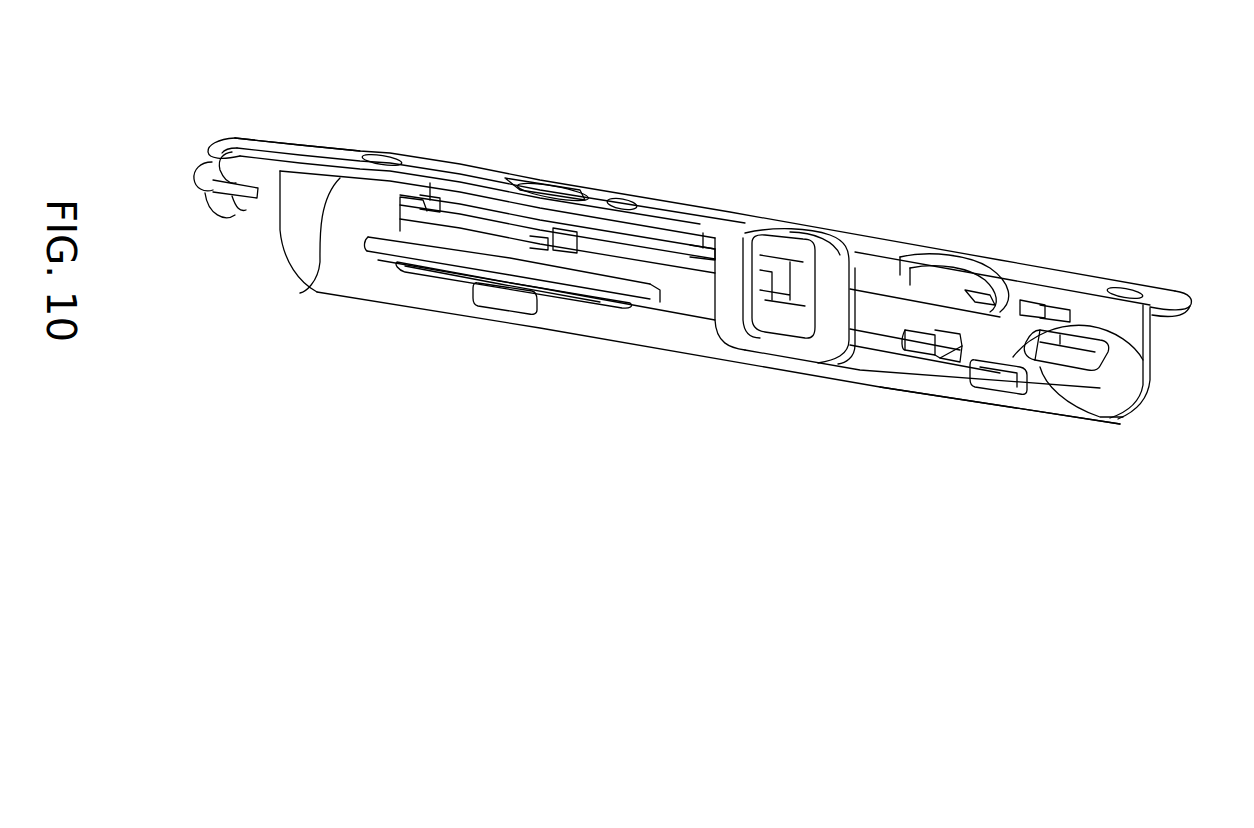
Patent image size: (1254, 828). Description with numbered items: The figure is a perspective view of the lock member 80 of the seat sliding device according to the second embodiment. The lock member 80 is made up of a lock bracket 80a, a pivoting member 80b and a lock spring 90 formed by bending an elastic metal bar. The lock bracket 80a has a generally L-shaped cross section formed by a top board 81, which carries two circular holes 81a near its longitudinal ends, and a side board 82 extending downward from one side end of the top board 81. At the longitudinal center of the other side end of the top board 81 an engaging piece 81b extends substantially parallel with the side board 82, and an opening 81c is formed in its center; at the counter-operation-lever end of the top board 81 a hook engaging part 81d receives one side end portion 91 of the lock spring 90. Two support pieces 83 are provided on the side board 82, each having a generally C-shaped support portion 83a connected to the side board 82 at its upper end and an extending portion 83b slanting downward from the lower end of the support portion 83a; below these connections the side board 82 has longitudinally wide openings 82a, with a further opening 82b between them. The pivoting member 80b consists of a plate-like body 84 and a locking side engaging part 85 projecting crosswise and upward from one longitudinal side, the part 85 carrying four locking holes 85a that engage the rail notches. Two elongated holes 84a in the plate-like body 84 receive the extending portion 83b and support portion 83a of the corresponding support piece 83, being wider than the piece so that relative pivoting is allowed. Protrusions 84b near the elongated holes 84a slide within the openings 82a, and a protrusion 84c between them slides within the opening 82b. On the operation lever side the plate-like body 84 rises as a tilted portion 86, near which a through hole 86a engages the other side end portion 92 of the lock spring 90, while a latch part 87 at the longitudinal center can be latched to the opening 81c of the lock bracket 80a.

The lock member 80 is at (850, 108).
The lock bracket 80a is at (653, 130).
The pivoting member 80b is at (843, 430).
The top board 81 is at (605, 190).
The circular hole 81a is at (383, 155).
The engaging piece 81b is at (778, 347).
The opening 81c is at (750, 323).
The hook engaging part 81d is at (223, 212).
The side board 82 is at (550, 310).
The opening 82a is at (428, 183).
The opening 82b is at (703, 233).
The support piece 83 is at (503, 177).
The support portion 83a is at (987, 303).
The extending portion 83b is at (997, 383).
The plate-like body 84 is at (660, 330).
The elongated hole 84a is at (577, 250).
The protrusion 84b is at (540, 243).
The protrusion 84c is at (813, 250).
The locking side engaging part 85 is at (393, 260).
The locking hole 85a is at (433, 277).
The tilted portion 86 is at (1067, 390).
The through hole 86a is at (930, 367).
The latch part 87 is at (770, 230).
The lock spring 90 is at (317, 280).
The one side end portion 91 is at (205, 163).
The other side end portion 92 is at (950, 367).